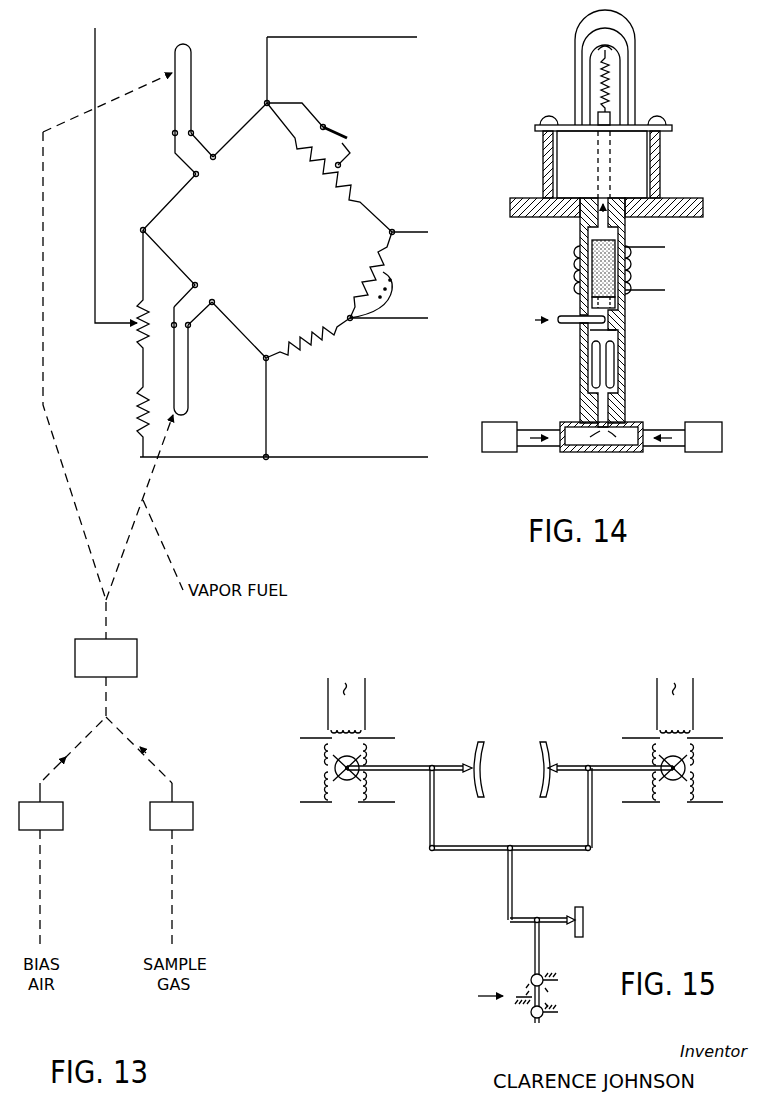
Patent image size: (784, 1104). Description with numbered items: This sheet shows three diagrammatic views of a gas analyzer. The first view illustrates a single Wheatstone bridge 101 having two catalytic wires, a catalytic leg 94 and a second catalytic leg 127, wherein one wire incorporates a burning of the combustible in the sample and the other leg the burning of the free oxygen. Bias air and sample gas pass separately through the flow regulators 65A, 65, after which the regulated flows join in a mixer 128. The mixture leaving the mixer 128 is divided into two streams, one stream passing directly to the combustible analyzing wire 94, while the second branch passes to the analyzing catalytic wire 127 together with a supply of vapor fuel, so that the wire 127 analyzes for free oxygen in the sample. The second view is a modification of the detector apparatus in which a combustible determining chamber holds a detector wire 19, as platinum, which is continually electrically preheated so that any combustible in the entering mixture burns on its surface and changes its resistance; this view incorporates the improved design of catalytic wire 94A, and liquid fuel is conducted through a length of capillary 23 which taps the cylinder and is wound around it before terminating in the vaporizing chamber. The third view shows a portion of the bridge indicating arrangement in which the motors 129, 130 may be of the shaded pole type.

In FIG. 13, the catalytic leg 94 is at (191, 79).
In FIG. 13, the bridge circuit 101 is at (278, 237).
In FIG. 13, the second catalytic leg 127 is at (189, 392).
In FIG. 13, the mixer 128 is at (139, 663).
In FIG. 13, the bias air flow controller 65A is at (52, 830).
In FIG. 13, the flow regulator 65 is at (160, 830).
In FIG. 14, the catalytic wire 94A is at (608, 104).
In FIG. 14, the capillary 23 is at (570, 314).
In FIG. 14, the detector wire 19 is at (597, 370).
In FIG. 15, the motor 129 is at (361, 831).
In FIG. 15, the motor 130 is at (685, 831).